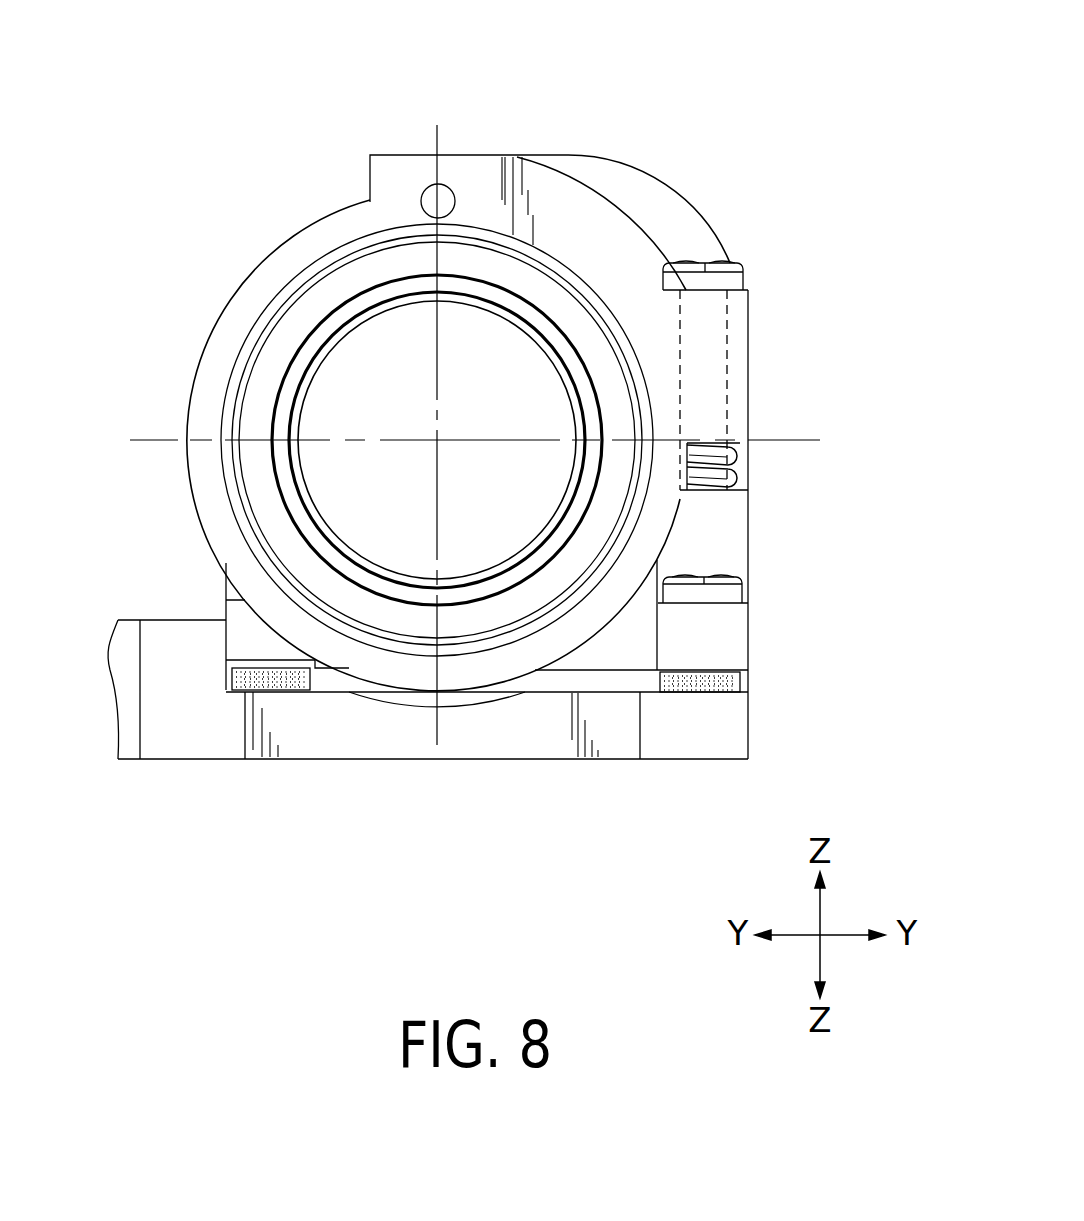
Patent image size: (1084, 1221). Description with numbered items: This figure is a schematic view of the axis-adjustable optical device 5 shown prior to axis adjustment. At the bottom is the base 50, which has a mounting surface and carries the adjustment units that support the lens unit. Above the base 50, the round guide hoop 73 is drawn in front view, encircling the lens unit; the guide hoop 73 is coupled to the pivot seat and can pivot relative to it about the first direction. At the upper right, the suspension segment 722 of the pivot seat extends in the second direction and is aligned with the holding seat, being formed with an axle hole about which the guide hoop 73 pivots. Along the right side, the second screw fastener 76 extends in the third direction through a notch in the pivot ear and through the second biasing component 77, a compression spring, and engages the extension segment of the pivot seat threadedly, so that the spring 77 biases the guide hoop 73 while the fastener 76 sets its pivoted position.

The axis-adjustable optical device 5 is at (660, 130).
The guide hoop 73 is at (530, 180).
The suspension segment 722 is at (672, 220).
The second screw fastener 76 is at (730, 281).
The second biasing component 77 is at (743, 473).
The base 50 is at (203, 760).